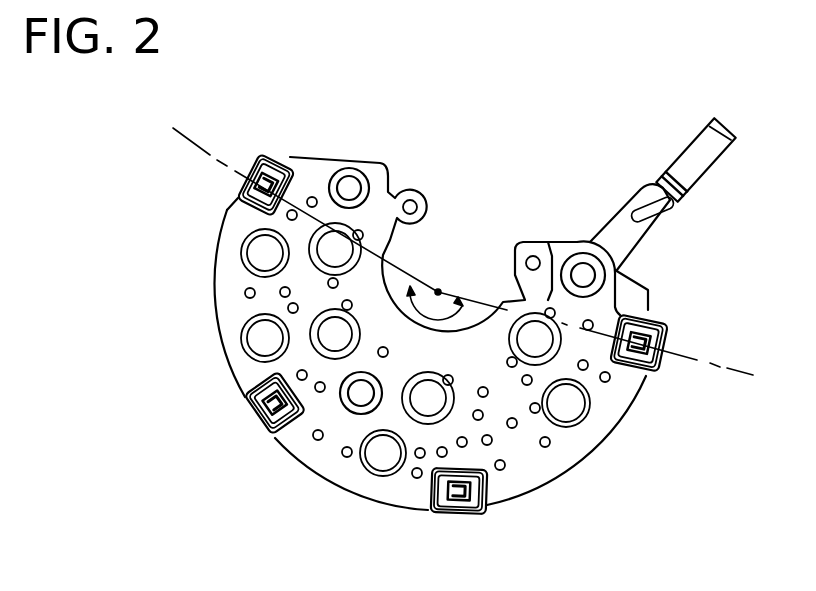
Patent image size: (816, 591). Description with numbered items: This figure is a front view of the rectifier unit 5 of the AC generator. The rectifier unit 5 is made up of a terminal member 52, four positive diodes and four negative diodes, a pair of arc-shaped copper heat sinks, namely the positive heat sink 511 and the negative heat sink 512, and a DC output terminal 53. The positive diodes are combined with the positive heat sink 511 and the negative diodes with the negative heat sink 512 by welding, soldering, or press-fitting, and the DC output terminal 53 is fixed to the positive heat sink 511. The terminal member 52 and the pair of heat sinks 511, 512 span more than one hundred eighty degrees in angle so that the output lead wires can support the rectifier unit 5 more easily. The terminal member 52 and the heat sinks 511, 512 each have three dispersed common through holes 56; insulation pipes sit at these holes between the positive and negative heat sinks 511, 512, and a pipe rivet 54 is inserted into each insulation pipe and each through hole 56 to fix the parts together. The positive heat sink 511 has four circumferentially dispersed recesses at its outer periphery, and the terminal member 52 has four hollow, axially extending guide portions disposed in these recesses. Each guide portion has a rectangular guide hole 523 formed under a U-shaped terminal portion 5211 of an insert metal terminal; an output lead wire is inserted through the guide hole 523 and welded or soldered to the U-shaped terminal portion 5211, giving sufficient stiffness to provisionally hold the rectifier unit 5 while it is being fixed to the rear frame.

The rectifier unit 5 is at (434, 125).
The positive copper heat sink 511 is at (572, 445).
The negative copper heat sink 512 is at (600, 298).
The terminal member 52 is at (253, 395).
The rectangular guide hole 523 is at (263, 418).
The U-shaped terminal portion 5211 is at (237, 192).
The DC output terminal 53 is at (713, 143).
The pipe rivet 54 is at (369, 187).
The through hole 56 is at (349, 188).